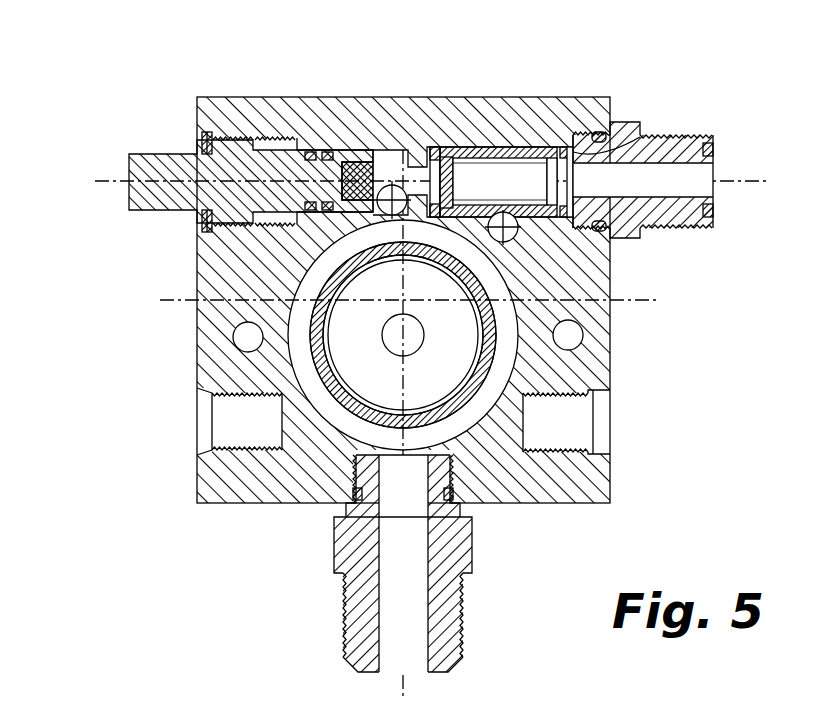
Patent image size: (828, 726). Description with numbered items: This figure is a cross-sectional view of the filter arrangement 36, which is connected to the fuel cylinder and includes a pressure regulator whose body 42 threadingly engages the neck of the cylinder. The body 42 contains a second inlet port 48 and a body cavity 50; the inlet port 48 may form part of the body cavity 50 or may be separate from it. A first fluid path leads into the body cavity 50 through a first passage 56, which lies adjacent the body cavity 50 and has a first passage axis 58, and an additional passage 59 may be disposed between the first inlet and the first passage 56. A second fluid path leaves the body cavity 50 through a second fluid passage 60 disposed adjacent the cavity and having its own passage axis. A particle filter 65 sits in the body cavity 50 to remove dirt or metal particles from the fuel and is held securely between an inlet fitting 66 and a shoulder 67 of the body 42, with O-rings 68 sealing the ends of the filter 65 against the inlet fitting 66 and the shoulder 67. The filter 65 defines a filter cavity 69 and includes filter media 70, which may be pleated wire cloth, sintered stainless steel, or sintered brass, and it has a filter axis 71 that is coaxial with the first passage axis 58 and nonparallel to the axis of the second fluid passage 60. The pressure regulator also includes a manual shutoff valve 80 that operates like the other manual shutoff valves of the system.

The filter arrangement 36 is at (140, 75).
The body 42 is at (197, 335).
The second inlet port 48 is at (650, 135).
The body cavity 50 is at (470, 146).
The first passage 56 is at (373, 165).
The first passage axis 58 is at (328, 152).
The passage 59 is at (310, 152).
The second fluid passage 60 is at (510, 240).
The particle filter 65 is at (562, 148).
The inlet fitting 66 is at (625, 122).
The shoulder 67 is at (442, 145).
The O-rings 68 is at (392, 185).
The filter cavity 69 is at (492, 170).
The filter media 70 is at (552, 158).
The filter axis 71 is at (570, 147).
The manual shutoff valve 80 is at (152, 211).